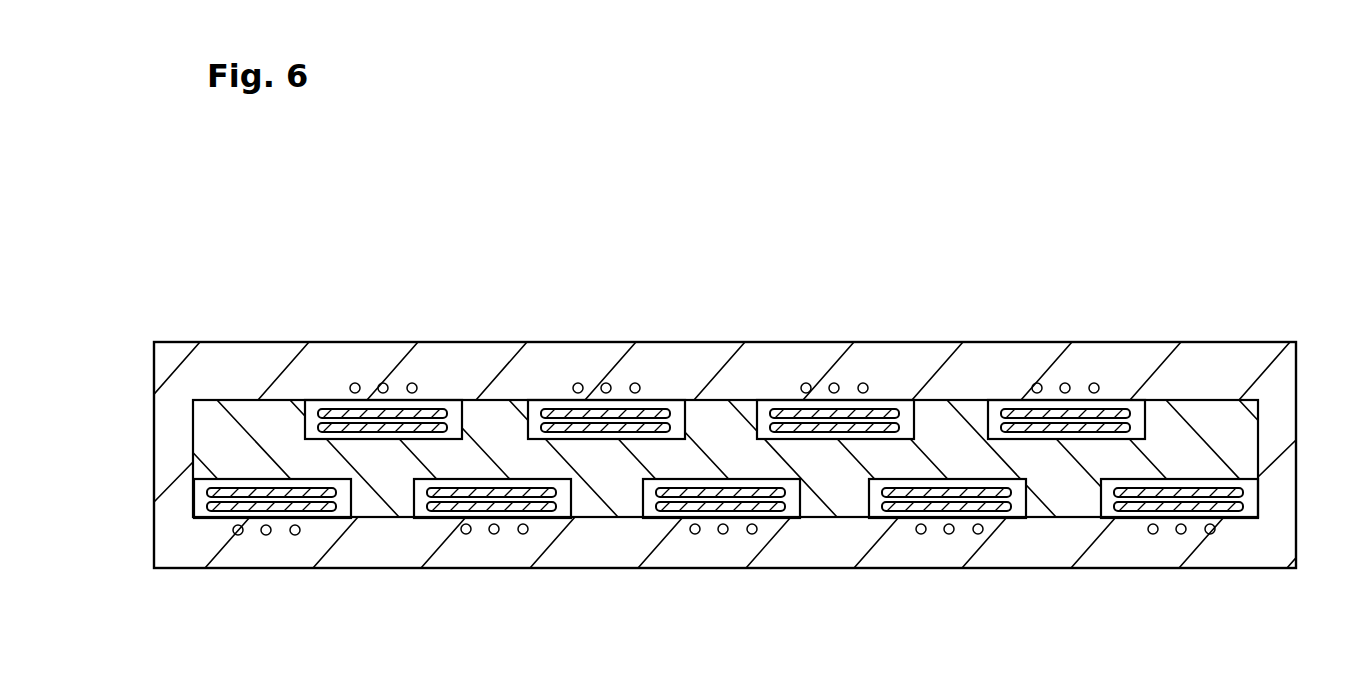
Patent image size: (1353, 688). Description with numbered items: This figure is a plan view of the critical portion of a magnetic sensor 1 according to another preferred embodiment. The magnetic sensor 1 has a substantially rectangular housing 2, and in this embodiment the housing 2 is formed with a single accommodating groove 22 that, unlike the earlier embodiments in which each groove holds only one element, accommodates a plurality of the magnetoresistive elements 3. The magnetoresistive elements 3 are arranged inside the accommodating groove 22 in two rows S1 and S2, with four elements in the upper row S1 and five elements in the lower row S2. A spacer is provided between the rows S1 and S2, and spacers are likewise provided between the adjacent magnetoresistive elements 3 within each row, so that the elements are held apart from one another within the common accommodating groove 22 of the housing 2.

The magnetic sensor 1 is at (748, 402).
The housing 2 is at (1280, 388).
The accommodating groove 22 is at (1213, 400).
The magnetoresistive elements 3 is at (432, 399).
The row S1 is at (144, 430).
The row S2 is at (149, 497).